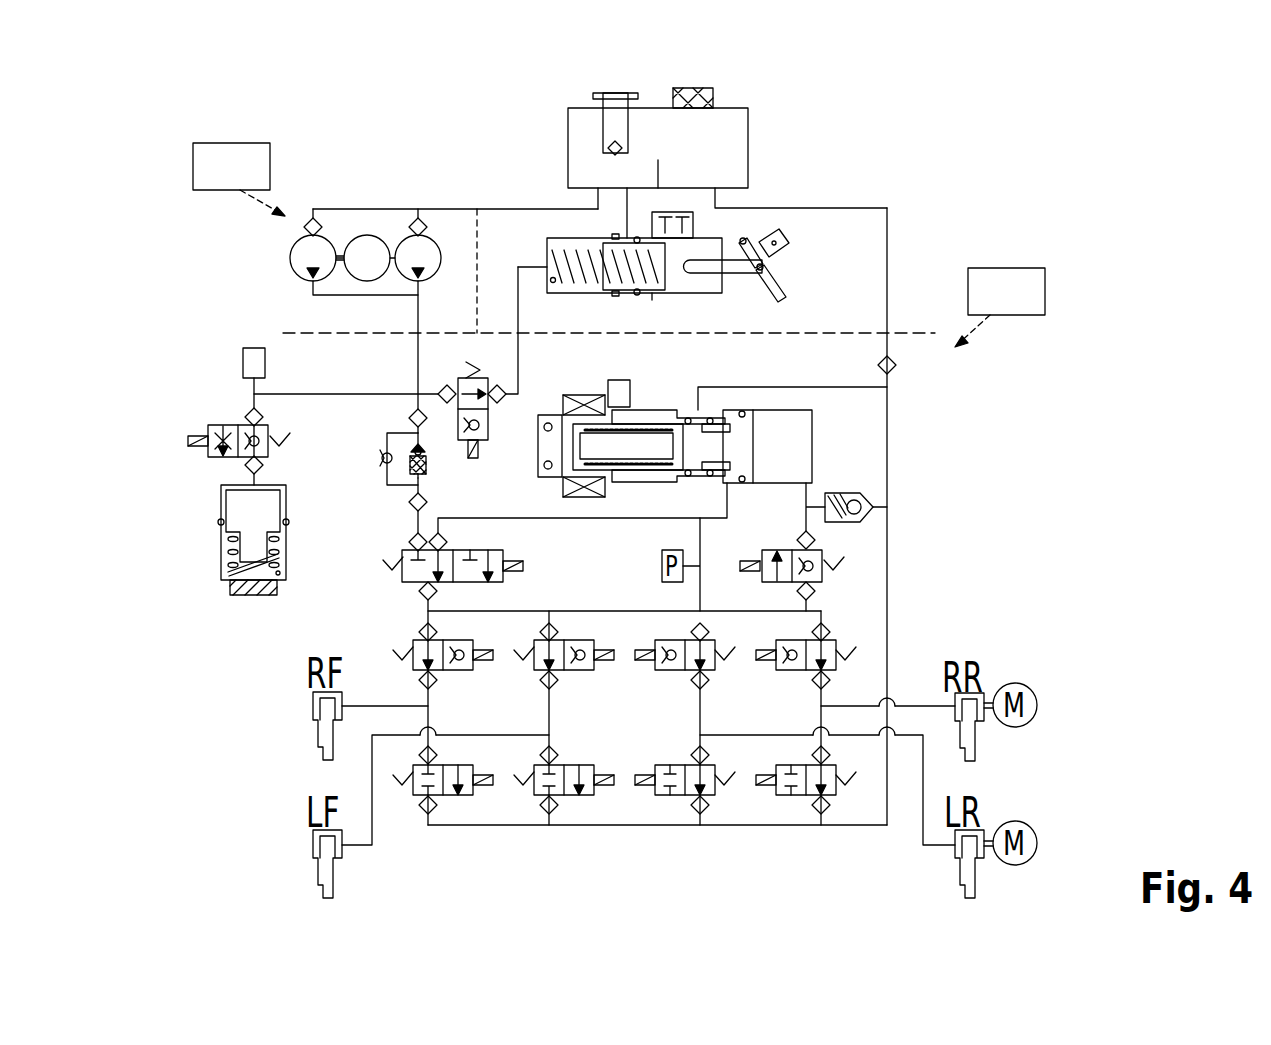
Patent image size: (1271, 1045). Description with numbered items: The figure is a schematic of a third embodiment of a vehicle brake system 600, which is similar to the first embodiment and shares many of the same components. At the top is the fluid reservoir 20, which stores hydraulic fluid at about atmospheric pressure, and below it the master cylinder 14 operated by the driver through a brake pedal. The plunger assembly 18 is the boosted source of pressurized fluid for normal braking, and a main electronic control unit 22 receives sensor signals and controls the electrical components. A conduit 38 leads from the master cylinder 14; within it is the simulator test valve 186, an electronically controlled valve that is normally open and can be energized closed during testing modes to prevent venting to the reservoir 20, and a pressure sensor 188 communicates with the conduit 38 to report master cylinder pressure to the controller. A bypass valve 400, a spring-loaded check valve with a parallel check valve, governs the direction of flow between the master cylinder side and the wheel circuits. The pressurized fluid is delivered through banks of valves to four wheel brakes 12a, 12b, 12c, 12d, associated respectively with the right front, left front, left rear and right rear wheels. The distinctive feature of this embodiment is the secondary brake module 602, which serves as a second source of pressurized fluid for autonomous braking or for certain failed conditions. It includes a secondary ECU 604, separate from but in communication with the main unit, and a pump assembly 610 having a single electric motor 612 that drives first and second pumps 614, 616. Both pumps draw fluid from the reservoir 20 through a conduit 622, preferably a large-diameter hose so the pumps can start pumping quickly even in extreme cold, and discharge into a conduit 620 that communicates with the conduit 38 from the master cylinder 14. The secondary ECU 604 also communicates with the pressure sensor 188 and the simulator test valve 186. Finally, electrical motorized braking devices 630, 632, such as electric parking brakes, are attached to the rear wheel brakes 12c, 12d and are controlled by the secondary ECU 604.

The brake system 600 is at (1033, 194).
The secondary brake module 602 is at (413, 130).
The secondary ECU 604 is at (232, 143).
The pump assembly 610 is at (370, 232).
The electric motor 612 is at (347, 273).
The first pump 614 is at (290, 260).
The second pump 616 is at (396, 250).
The conduit 620 is at (418, 305).
The conduit 622 is at (467, 205).
The fluid reservoir 20 is at (562, 142).
The conduit 38 is at (517, 287).
The master cylinder 14 is at (753, 227).
The electronic control unit 22 is at (1047, 270).
The simulator test valve 186 is at (462, 340).
The pressure sensor 188 is at (242, 365).
The bypass valve 400 is at (398, 418).
The plunger assembly 18 is at (673, 398).
The wheel brake 12a is at (313, 708).
The wheel brake 12b is at (313, 845).
The wheel brake 12c is at (985, 830).
The wheel brake 12d is at (985, 693).
The motorized braking device 630 is at (1037, 843).
The motorized braking device 632 is at (1037, 705).